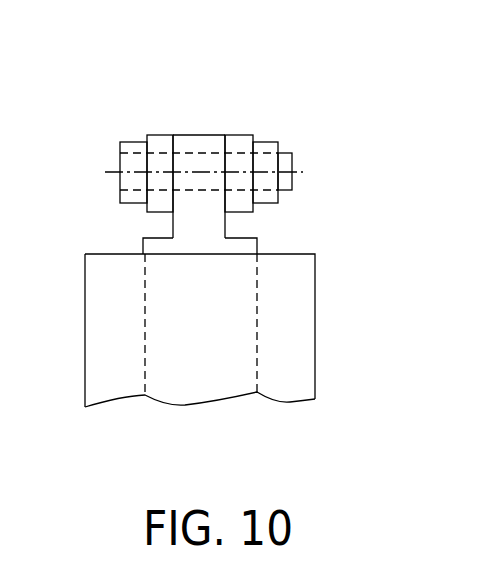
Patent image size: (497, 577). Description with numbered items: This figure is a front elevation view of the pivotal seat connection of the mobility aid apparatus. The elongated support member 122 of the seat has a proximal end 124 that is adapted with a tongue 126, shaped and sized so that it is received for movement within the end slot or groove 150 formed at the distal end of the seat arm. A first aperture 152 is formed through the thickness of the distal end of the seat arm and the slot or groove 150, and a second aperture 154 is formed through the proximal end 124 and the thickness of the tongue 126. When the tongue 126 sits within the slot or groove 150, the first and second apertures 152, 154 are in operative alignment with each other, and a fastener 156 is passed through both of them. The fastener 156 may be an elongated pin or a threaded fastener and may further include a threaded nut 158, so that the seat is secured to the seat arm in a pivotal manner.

The elongated support member 122 is at (257, 330).
The proximal end 124 is at (258, 238).
The tongue 126 is at (210, 226).
The end slot or groove 150 is at (214, 137).
The first aperture 152 is at (160, 155).
The second aperture 154 is at (199, 155).
The fastener 156 is at (120, 149).
The threaded nut 158 is at (266, 140).